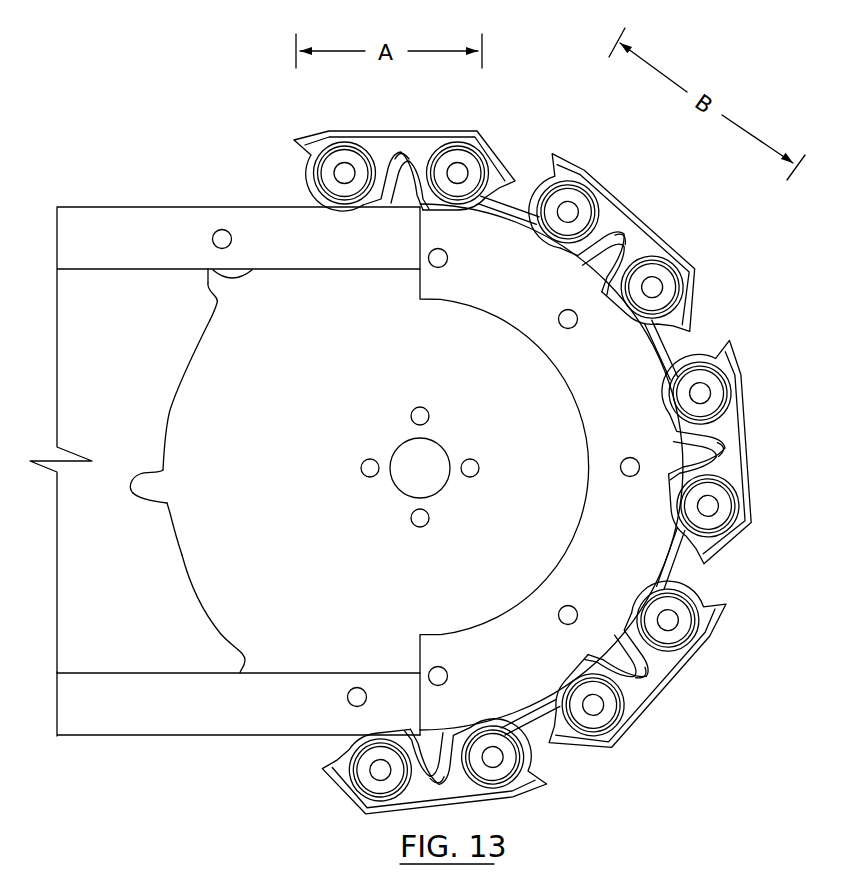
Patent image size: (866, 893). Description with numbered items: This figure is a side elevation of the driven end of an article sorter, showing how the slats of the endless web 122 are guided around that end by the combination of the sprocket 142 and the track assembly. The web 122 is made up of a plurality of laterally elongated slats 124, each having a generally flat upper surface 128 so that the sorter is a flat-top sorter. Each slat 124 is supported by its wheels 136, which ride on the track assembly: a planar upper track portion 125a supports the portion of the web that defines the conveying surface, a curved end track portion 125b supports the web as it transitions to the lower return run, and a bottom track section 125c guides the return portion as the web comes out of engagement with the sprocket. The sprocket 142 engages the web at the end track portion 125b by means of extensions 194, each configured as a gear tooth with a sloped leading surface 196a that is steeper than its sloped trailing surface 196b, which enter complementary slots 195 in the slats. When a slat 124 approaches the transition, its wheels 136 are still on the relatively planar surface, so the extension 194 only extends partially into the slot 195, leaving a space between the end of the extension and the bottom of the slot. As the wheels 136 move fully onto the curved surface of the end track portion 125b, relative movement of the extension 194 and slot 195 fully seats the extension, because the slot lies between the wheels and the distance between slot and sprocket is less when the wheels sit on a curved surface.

The endless web 122 is at (537, 451).
The slat 124 is at (482, 130).
The upper track portion 125a is at (127, 207).
The end track portion 125b is at (538, 348).
The bottom track section 125c is at (110, 737).
The upper surface 128 is at (376, 130).
The wheel 136 is at (322, 135).
The sprocket 142 is at (172, 398).
The extension 194 is at (432, 150).
The slot 195 is at (404, 158).
The leading surface 196a is at (152, 470).
The trailing surface 196b is at (138, 498).